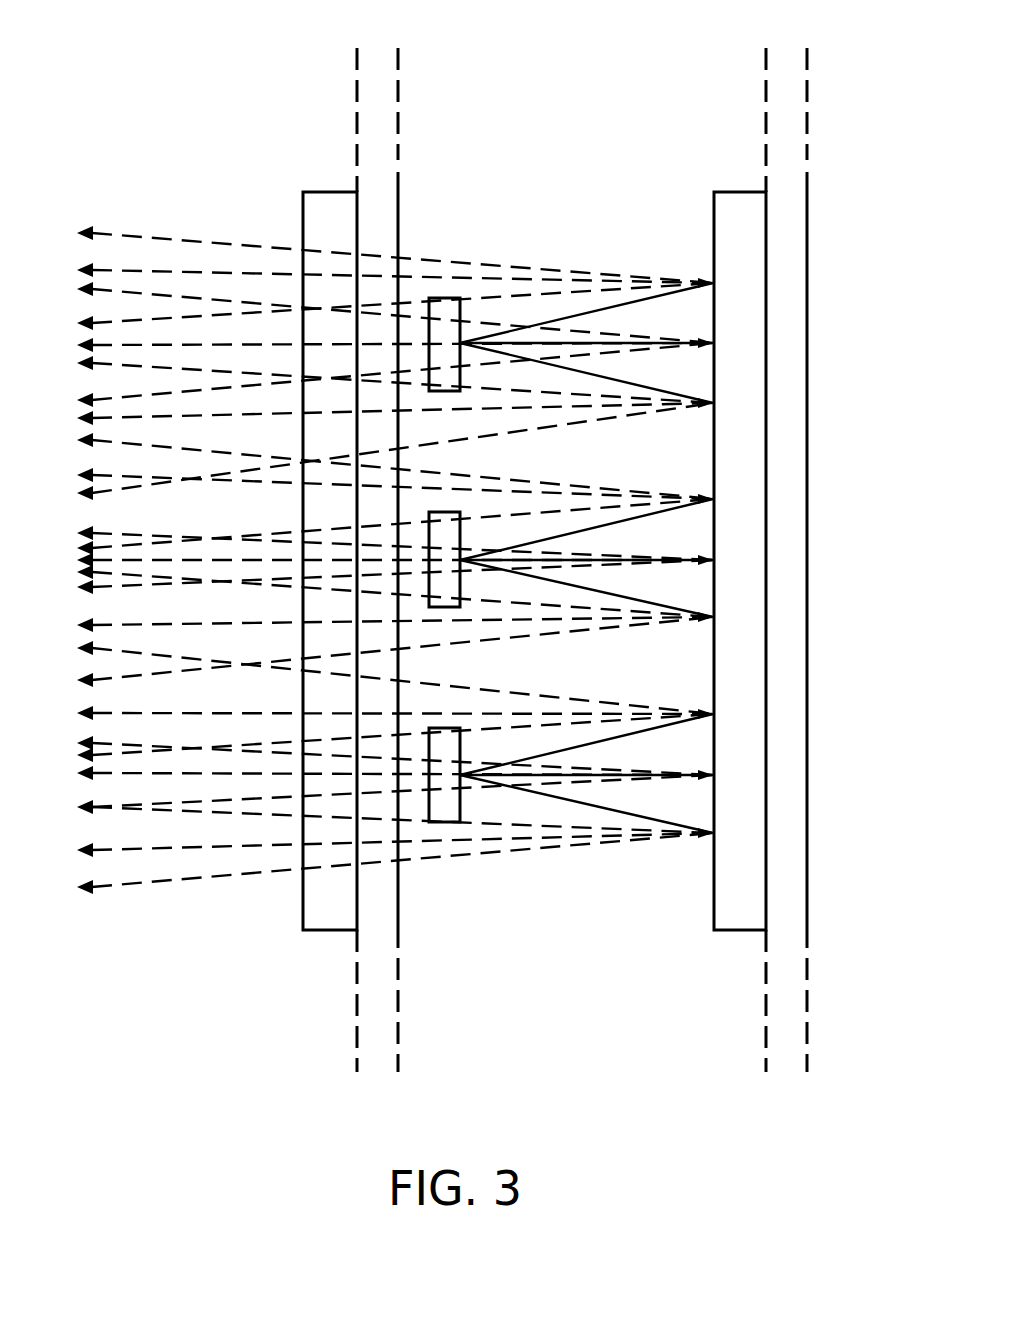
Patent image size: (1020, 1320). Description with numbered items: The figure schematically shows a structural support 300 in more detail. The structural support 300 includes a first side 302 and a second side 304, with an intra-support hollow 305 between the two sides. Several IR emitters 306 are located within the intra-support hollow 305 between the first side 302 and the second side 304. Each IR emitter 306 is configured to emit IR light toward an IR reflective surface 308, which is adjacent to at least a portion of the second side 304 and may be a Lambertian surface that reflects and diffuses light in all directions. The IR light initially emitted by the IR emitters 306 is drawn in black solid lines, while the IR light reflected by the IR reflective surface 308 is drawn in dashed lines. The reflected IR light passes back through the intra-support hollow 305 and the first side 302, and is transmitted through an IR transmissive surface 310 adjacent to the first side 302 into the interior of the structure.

The structural support 300 is at (214, 92).
The first side 302 is at (398, 215).
The second side 304 is at (807, 248).
The intra-support hollow 305 is at (559, 164).
The IR emitters 306 is at (460, 300).
The IR reflective surface 308 is at (714, 209).
The IR transmissive surface 310 is at (303, 205).